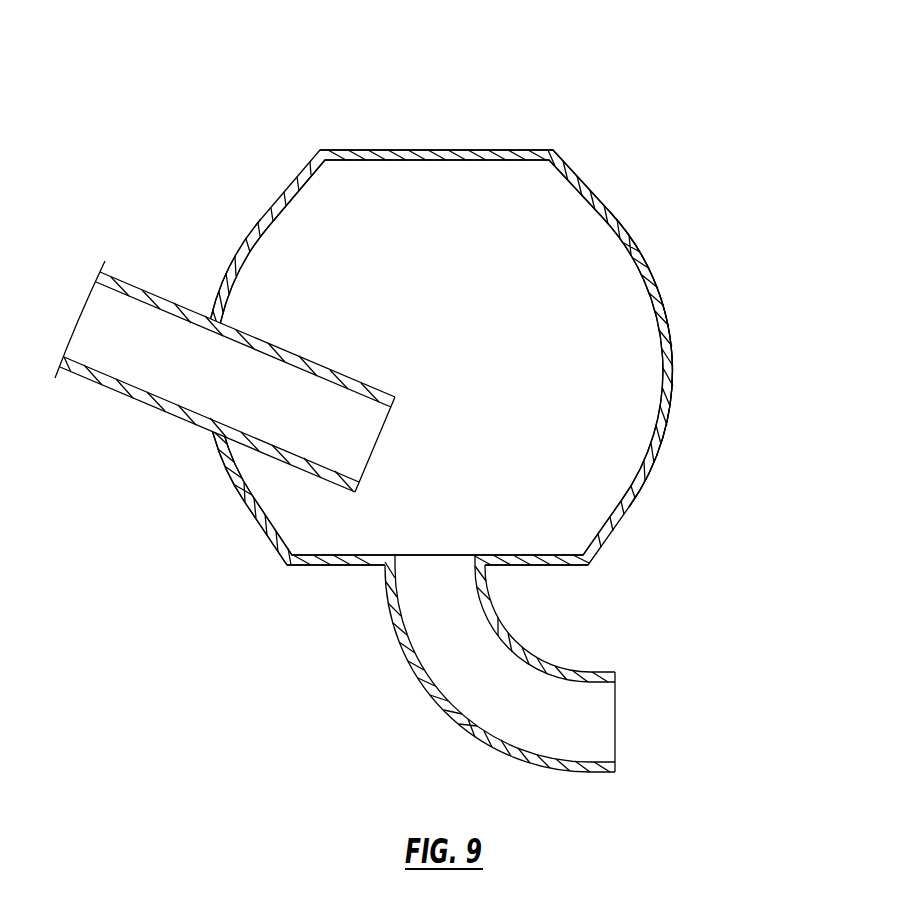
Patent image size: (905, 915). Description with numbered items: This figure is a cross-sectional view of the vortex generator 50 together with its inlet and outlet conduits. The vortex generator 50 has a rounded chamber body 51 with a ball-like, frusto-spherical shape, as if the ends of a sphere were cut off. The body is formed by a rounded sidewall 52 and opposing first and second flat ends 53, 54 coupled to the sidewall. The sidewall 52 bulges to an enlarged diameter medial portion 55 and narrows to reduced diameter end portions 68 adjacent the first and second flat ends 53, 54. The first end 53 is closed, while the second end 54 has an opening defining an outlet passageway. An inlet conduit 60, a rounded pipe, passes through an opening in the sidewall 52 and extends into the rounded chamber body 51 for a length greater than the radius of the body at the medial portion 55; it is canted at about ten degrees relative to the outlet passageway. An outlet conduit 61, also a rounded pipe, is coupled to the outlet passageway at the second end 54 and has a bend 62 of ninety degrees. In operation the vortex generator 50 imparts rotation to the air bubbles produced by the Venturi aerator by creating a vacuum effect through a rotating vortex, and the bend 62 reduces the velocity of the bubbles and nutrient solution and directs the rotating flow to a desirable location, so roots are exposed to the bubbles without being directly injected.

The vortex generator 50 is at (467, 92).
The rounded chamber body 51 is at (223, 560).
The sidewall 52 is at (237, 250).
The first flat end 53 is at (350, 155).
The second flat end 54 is at (297, 568).
The enlarged diameter medial portion 55 is at (667, 390).
The inlet conduit 60 is at (122, 393).
The outlet conduit 61 is at (577, 728).
The bend 62 is at (445, 683).
The reduced diameter end portions 68 is at (628, 227).